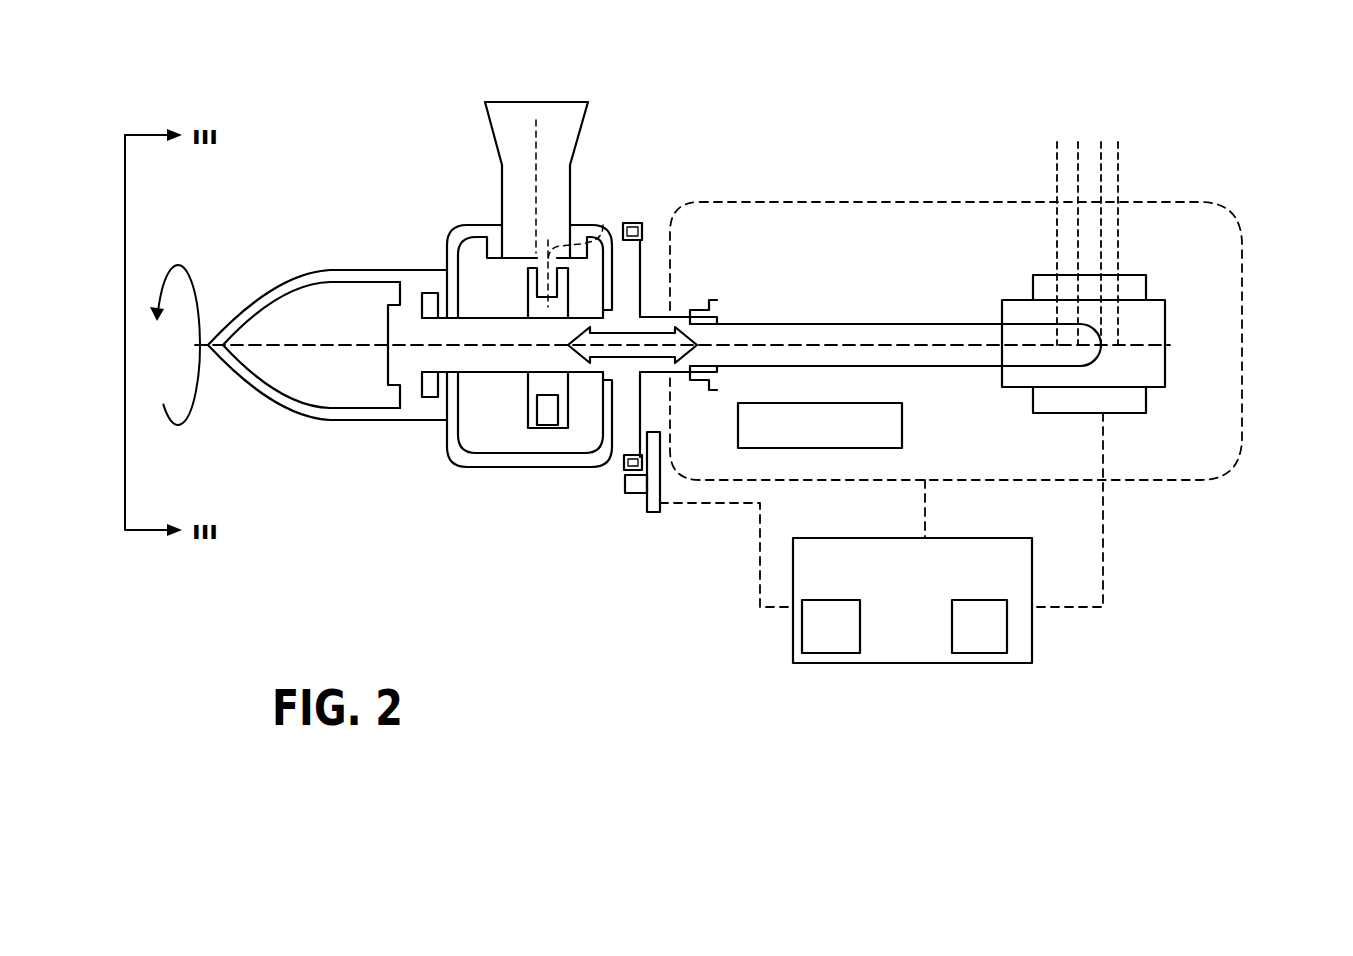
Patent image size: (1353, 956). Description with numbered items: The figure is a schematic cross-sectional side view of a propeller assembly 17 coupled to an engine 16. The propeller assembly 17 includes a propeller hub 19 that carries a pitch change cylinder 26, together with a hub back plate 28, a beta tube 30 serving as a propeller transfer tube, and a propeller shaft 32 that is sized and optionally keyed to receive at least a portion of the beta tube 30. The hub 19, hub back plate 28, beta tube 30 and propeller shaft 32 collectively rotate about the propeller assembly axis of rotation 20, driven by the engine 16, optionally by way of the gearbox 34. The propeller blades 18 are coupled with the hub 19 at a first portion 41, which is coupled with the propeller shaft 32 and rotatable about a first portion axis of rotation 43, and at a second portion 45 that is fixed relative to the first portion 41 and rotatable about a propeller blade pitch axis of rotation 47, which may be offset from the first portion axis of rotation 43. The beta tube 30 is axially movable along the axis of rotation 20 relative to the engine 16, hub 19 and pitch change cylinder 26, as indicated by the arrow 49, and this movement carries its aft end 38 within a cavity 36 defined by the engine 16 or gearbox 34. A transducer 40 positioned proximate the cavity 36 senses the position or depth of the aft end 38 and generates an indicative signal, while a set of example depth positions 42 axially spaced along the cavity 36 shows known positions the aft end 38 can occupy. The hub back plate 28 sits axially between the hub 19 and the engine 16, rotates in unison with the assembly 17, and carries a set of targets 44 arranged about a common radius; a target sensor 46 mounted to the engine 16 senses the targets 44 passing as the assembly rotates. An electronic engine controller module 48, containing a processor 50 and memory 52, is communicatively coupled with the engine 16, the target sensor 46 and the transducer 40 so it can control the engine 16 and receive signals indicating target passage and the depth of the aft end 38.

The engine 16 is at (940, 263).
The propeller assembly 17 is at (536, 484).
The propeller blade 18 is at (563, 137).
The propeller hub 19 is at (450, 471).
The propeller assembly axis of rotation 20 is at (964, 348).
The pitch change cylinder 26 is at (276, 427).
The hub back plate 28 is at (643, 337).
The beta tube 30 is at (943, 330).
The propeller shaft 32 is at (692, 309).
The gearbox 34 is at (820, 425).
The cavity 36 is at (1148, 320).
The aft end 38 is at (1103, 356).
The transducer 40 is at (1130, 402).
The first portion 41 is at (533, 283).
The depth positions 42 is at (1090, 108).
The first portion axis of rotation 43 is at (603, 225).
The set of targets 44 is at (639, 222).
The second portion 45 is at (488, 213).
The target sensor 46 is at (657, 497).
The propeller blade pitch axis of rotation 47 is at (545, 182).
The engine controller module 48 is at (896, 642).
The arrow 49 is at (673, 240).
The processor 50 is at (818, 646).
The memory 52 is at (968, 646).